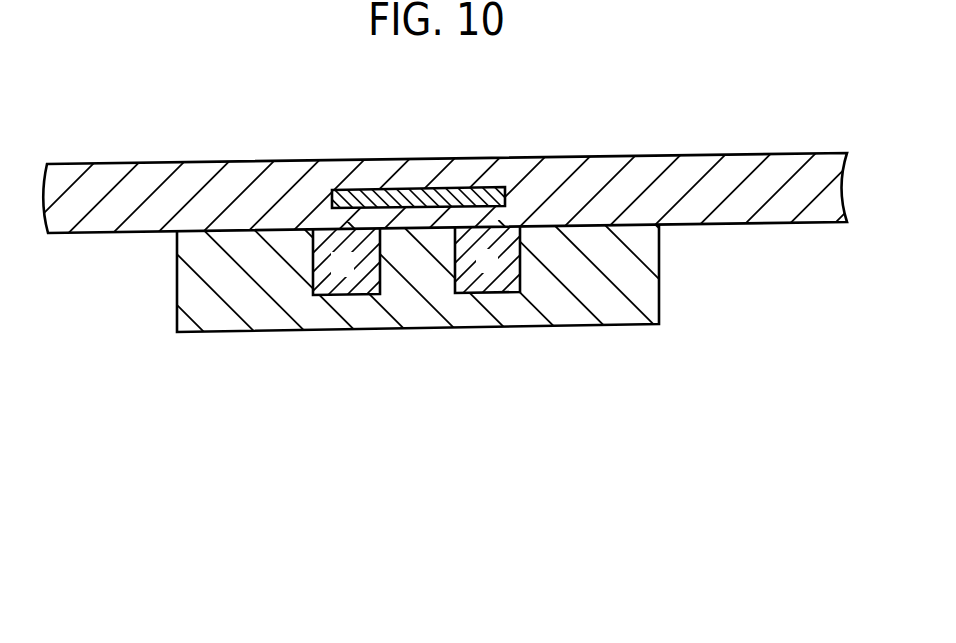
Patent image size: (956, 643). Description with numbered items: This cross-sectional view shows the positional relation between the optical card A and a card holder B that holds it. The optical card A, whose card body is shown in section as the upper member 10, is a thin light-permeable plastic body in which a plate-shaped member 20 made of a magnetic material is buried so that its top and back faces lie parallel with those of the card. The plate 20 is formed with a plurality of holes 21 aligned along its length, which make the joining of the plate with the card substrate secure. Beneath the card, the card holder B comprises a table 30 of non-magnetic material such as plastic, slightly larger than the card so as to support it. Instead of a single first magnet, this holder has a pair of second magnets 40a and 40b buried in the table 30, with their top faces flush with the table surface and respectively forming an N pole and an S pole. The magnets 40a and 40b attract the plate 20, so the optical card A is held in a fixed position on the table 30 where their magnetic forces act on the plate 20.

The plate member 10 is at (153, 163).
The plate-shaped member 20 is at (493, 190).
The holes 21 is at (637, 162).
The table 30 is at (652, 299).
The second magnet 40a is at (345, 290).
The second magnet 40b is at (467, 290).
The optical card A is at (485, 142).
The card holder B is at (385, 324).